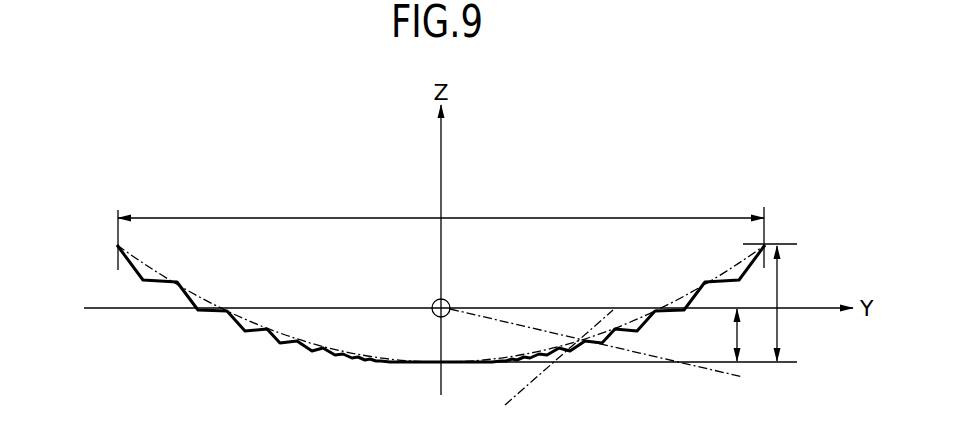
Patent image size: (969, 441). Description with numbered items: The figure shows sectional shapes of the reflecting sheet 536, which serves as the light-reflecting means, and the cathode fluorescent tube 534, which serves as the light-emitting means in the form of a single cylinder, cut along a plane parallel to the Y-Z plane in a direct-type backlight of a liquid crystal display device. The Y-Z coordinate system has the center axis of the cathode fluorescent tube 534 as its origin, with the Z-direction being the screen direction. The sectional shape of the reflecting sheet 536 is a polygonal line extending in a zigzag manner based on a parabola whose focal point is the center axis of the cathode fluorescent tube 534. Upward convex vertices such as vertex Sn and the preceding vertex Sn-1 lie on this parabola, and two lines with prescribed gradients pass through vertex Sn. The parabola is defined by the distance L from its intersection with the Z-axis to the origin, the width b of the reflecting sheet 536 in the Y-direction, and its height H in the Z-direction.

The cathode fluorescent tube 534 is at (432, 305).
The reflecting sheet 536 is at (178, 286).
The width of the reflecting sheet b is at (441, 231).
The height of the reflecting sheet H is at (770, 302).
The distance between the parabola's intersection with the Z-axis and the origin L is at (747, 335).
The vertex Sn is at (583, 338).
The vertex Sn-1 is at (557, 347).